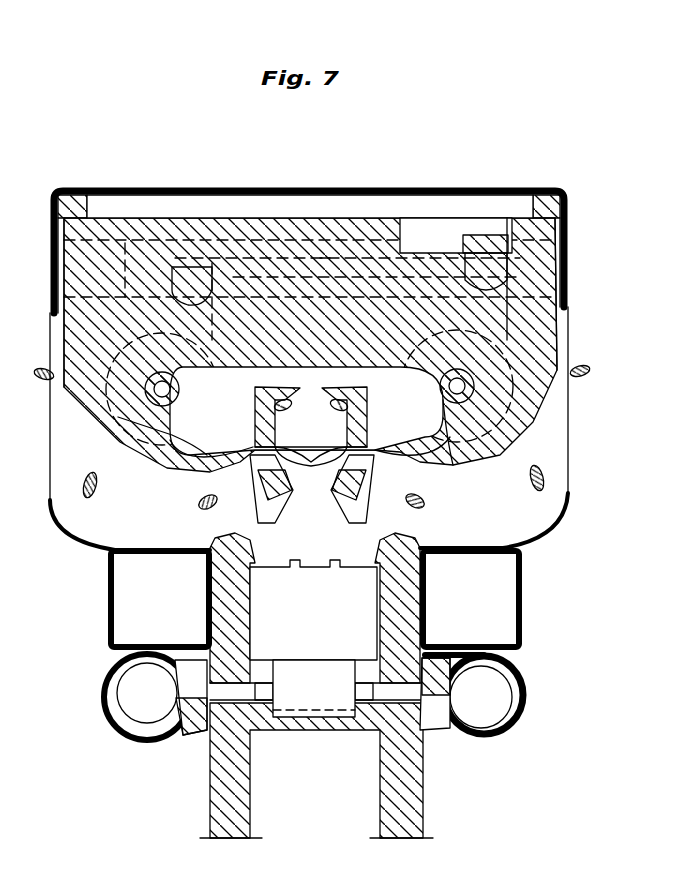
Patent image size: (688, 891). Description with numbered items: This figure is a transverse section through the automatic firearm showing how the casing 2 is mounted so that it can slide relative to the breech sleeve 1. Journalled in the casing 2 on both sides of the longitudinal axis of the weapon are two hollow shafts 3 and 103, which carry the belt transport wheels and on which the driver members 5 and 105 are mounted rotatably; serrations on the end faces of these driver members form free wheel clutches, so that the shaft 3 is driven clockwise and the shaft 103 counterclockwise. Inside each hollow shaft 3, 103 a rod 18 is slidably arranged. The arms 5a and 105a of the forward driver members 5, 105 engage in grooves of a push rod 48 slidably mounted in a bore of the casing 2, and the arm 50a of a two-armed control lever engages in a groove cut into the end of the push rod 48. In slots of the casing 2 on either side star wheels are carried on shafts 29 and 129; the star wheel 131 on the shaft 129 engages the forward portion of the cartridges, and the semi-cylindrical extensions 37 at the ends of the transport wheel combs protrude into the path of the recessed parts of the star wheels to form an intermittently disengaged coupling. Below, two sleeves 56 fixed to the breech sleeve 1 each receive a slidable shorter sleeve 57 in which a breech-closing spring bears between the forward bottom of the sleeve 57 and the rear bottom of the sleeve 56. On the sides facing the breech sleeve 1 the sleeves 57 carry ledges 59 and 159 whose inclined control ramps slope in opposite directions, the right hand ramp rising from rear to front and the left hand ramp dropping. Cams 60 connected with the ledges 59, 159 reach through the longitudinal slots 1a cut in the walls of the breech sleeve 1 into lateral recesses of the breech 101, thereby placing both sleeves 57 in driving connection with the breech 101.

The breech sleeve 1 is at (218, 815).
The longitudinal slots 1a is at (385, 665).
The casing 2 is at (135, 191).
The hollow shaft 3 is at (147, 393).
The driver member 5 is at (160, 402).
The arm 5a is at (198, 270).
The rod 18 is at (150, 402).
The shaft 29 is at (263, 458).
The semi-cylindrical extensions 37 is at (205, 507).
The push rod 48 is at (323, 258).
The arm of control lever 50a is at (478, 244).
The sleeve 56 is at (519, 713).
The shorter sleeve 57 is at (115, 713).
The ledge 59 is at (190, 718).
The cams 60 is at (395, 695).
The breech 101 is at (297, 572).
The hollow shaft 103 is at (470, 386).
The driver member 105 is at (507, 418).
The arm 105a is at (497, 282).
The shaft 129 is at (367, 458).
The star wheel 131 is at (352, 410).
The ledge 159 is at (437, 700).